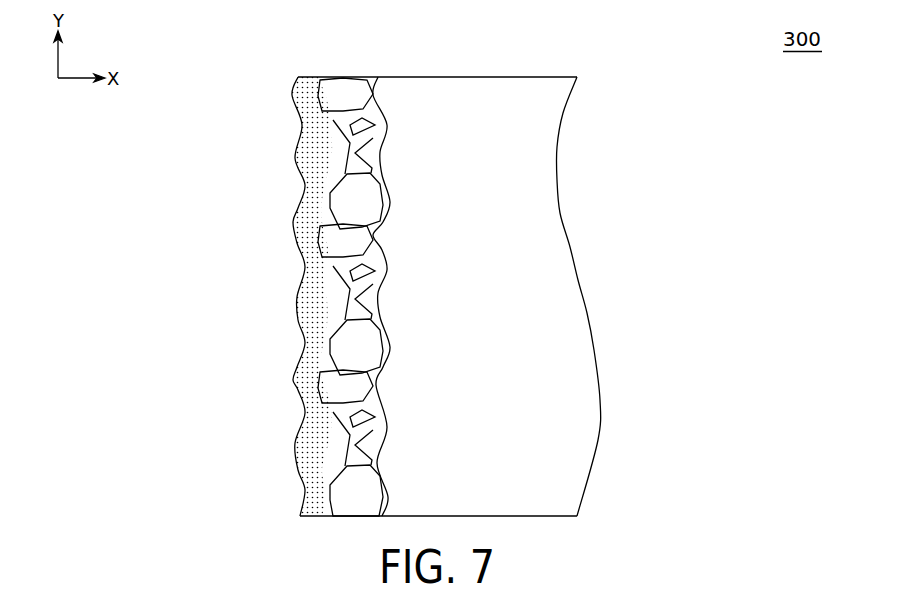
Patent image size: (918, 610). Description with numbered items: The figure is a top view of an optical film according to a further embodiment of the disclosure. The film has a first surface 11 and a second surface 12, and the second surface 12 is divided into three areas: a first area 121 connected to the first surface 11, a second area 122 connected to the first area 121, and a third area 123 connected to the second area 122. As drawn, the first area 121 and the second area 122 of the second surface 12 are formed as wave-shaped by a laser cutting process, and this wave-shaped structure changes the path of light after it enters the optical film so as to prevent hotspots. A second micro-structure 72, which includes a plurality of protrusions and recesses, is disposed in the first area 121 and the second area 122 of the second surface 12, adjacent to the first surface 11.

The first surface 11 is at (296, 145).
The second surface 12 is at (475, 295).
The second micro-structure 72 is at (320, 310).
The first area 121 is at (323, 69).
The second area 122 is at (377, 69).
The third area 123 is at (577, 69).